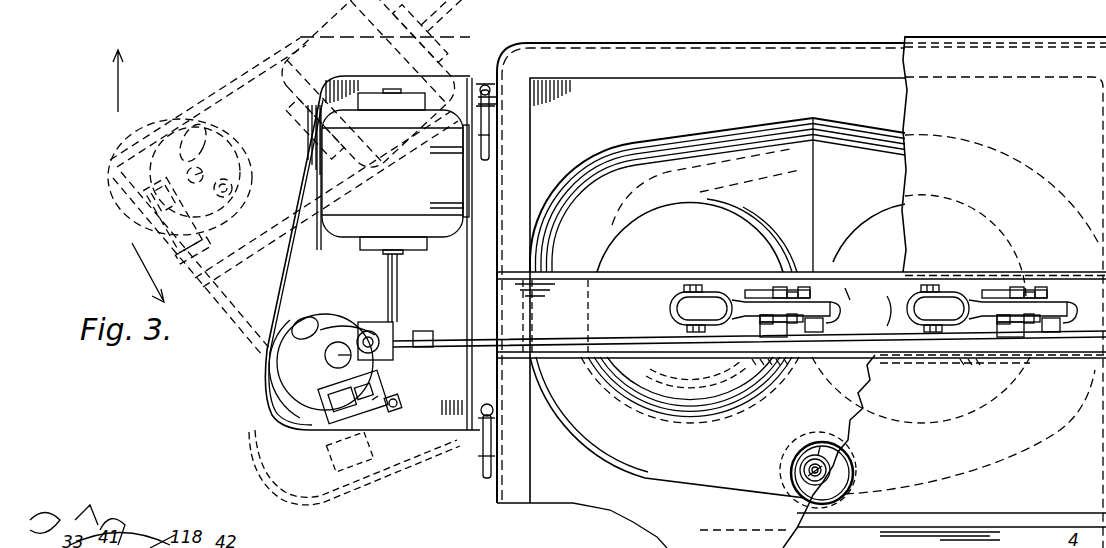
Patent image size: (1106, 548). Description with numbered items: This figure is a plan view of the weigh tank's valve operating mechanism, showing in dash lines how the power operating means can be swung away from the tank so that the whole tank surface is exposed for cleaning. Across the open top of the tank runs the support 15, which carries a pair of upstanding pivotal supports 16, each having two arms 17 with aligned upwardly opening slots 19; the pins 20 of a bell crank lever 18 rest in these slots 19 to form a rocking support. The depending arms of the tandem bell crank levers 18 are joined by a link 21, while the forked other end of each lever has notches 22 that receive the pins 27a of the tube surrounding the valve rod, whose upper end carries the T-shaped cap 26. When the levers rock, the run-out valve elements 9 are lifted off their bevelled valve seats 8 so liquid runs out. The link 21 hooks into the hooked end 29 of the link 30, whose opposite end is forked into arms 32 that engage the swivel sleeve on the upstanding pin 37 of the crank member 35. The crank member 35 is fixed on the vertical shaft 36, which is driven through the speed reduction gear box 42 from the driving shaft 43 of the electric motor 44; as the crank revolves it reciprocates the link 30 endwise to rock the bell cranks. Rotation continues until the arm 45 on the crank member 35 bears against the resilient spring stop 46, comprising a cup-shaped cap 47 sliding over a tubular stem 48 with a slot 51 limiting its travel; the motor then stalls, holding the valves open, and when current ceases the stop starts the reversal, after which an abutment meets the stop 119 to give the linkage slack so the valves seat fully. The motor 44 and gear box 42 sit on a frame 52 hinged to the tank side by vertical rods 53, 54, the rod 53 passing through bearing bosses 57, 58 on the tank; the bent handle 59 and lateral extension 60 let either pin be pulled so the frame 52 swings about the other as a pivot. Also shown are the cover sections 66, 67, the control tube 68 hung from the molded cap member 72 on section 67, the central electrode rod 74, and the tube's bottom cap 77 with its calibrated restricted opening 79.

The bevelled valve seat 8 is at (655, 410).
The run-out valve element 9 is at (807, 306).
The support 15 is at (840, 283).
The pivotal support 16 is at (752, 290).
The arm 17 is at (780, 289).
The bell crank lever 18 is at (843, 318).
The slot 19 is at (805, 289).
The pin 20 is at (790, 292).
The link 21 is at (879, 306).
The notch 22 is at (703, 336).
The T-shaped head or cap 26 is at (700, 302).
The pin 27a is at (692, 288).
The hooked end 29 is at (787, 385).
The link 30 is at (557, 338).
The forked arm 32 is at (376, 285).
The rotary head or crank member 35 is at (231, 121).
The vertical shaft 36 is at (345, 385).
The upstanding pin 37 is at (372, 325).
The speed reduction gear box 42 is at (282, 360).
The driving shaft 43 is at (399, 281).
The electric motor 44 is at (277, 67).
The arm 45 is at (301, 318).
The spring stop 46 is at (312, 401).
The cup-shaped cap or sleeve 47 is at (303, 431).
The tubular stem 48 is at (372, 400).
The slot 51 is at (493, 416).
The frame 52 is at (209, 74).
The rod 53 is at (492, 90).
The rod 54 is at (492, 406).
The bearing boss 57 is at (495, 100).
The bearing boss 58 is at (483, 82).
The handle 59 is at (490, 137).
The lateral extension 60 is at (493, 456).
The cover section 66 is at (1004, 312).
The cover section 67 is at (972, 314).
The control tube 68 is at (800, 458).
The cap member or support 72 is at (860, 471).
The metal rod 74 is at (812, 474).
The cap 77 is at (813, 447).
The restricted opening 79 is at (806, 469).
The stop 119 is at (397, 372).